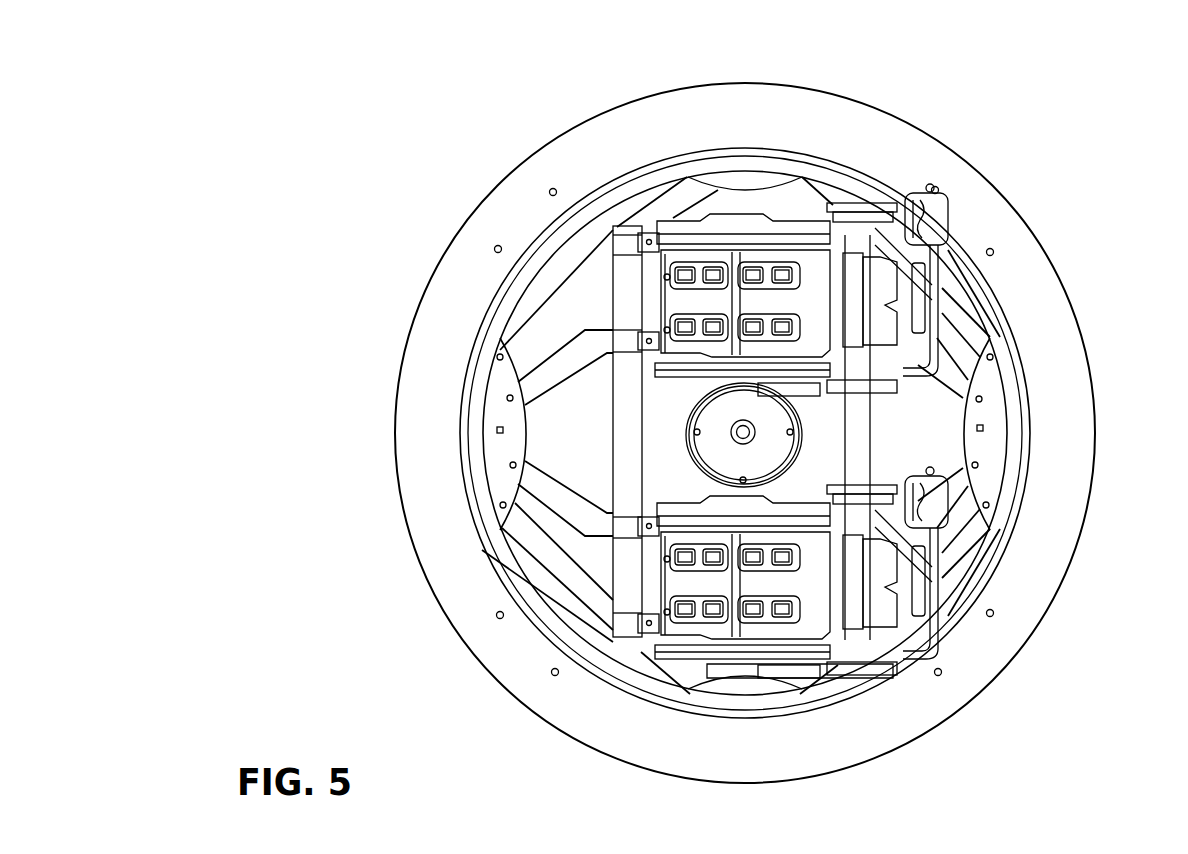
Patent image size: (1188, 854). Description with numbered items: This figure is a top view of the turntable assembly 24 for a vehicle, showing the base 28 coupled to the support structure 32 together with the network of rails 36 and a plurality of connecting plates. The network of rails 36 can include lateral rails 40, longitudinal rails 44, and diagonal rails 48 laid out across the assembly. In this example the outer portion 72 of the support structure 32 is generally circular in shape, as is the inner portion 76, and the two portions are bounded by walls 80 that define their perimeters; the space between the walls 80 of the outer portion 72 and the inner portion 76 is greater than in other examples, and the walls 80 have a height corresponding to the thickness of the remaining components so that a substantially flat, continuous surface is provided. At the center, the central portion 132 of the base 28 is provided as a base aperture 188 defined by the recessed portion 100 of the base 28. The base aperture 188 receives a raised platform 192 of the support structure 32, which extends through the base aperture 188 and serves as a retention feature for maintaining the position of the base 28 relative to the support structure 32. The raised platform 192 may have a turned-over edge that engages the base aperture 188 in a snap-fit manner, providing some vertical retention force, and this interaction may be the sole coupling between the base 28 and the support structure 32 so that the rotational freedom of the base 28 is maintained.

The turntable assembly 24 is at (1078, 190).
The base 28 is at (777, 150).
The support structure 32 is at (570, 121).
The network of rails 36 is at (530, 365).
The lateral rails 40 is at (620, 283).
The longitudinal rails 44 is at (643, 612).
The diagonal rails 48 is at (562, 302).
The outer portion 72 is at (933, 702).
The inner portion 76 is at (813, 698).
The walls 80 is at (761, 720).
The recessed portion 100 is at (922, 432).
The central portion 132 is at (703, 450).
The base aperture 188 is at (803, 465).
The raised platform 192 is at (713, 402).